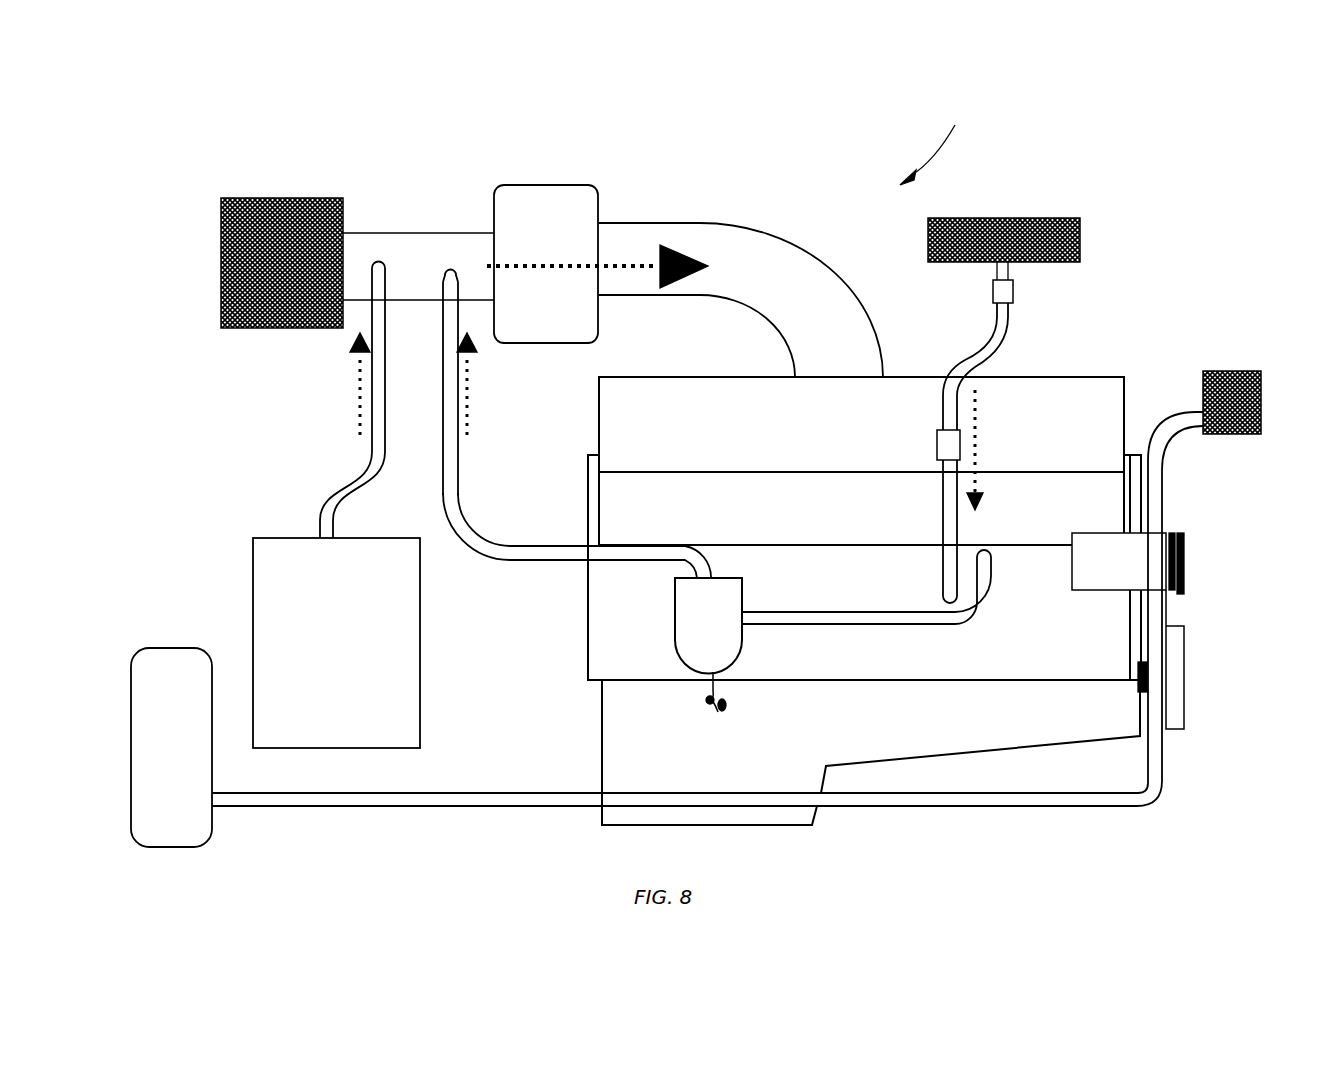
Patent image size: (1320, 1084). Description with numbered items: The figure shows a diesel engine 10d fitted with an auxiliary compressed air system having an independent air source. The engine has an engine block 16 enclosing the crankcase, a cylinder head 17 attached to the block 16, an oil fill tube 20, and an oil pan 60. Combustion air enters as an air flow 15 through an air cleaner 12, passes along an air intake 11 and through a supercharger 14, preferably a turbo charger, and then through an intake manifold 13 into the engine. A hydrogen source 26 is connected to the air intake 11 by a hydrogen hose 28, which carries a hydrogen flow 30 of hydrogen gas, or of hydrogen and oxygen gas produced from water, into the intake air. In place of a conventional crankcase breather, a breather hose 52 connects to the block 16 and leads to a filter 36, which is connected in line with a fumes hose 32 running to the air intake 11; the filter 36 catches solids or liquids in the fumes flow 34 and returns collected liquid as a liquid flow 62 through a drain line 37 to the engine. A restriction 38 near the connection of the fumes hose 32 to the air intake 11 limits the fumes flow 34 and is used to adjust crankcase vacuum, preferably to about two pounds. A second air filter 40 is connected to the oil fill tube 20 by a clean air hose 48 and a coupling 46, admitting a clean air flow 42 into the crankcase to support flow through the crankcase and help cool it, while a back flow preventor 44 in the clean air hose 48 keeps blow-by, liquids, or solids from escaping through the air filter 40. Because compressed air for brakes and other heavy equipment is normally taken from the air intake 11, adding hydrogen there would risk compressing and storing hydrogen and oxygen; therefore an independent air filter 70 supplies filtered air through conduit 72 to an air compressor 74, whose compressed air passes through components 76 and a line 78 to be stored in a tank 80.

The diesel engine 10d is at (943, 144).
The air intake 11 is at (412, 247).
The air cleaner 12 is at (260, 330).
The intake manifold 13 is at (768, 263).
The supercharger 14 is at (553, 233).
The air flow 15 is at (642, 257).
The engine block 16 is at (864, 567).
The cylinder head 17 is at (861, 461).
The oil fill tube 20 is at (947, 530).
The hydrogen source 26 is at (336, 643).
The hydrogen hose 28 is at (360, 470).
The hydrogen flow 30 is at (360, 386).
The fumes hose 32 is at (457, 507).
The fumes flow 34 is at (467, 392).
The filter 36 is at (708, 626).
The drain line 37 is at (717, 692).
The restriction 38 is at (450, 270).
The second air filter 40 is at (1030, 218).
The clean air flow 42 is at (975, 447).
The back flow preventor 44 is at (1013, 292).
The coupling 46 is at (935, 443).
The clean air hose 48 is at (968, 343).
The breather hose 52 is at (992, 583).
The oil pan 60 is at (874, 743).
The liquid flow 62 is at (705, 685).
The air filter 70 is at (1222, 370).
The coolant conduit 72 is at (1158, 487).
The air compressor 74 is at (1119, 561).
The radiator 76 is at (1179, 609).
The return conduit 78 is at (1165, 764).
The tank 80 is at (171, 747).